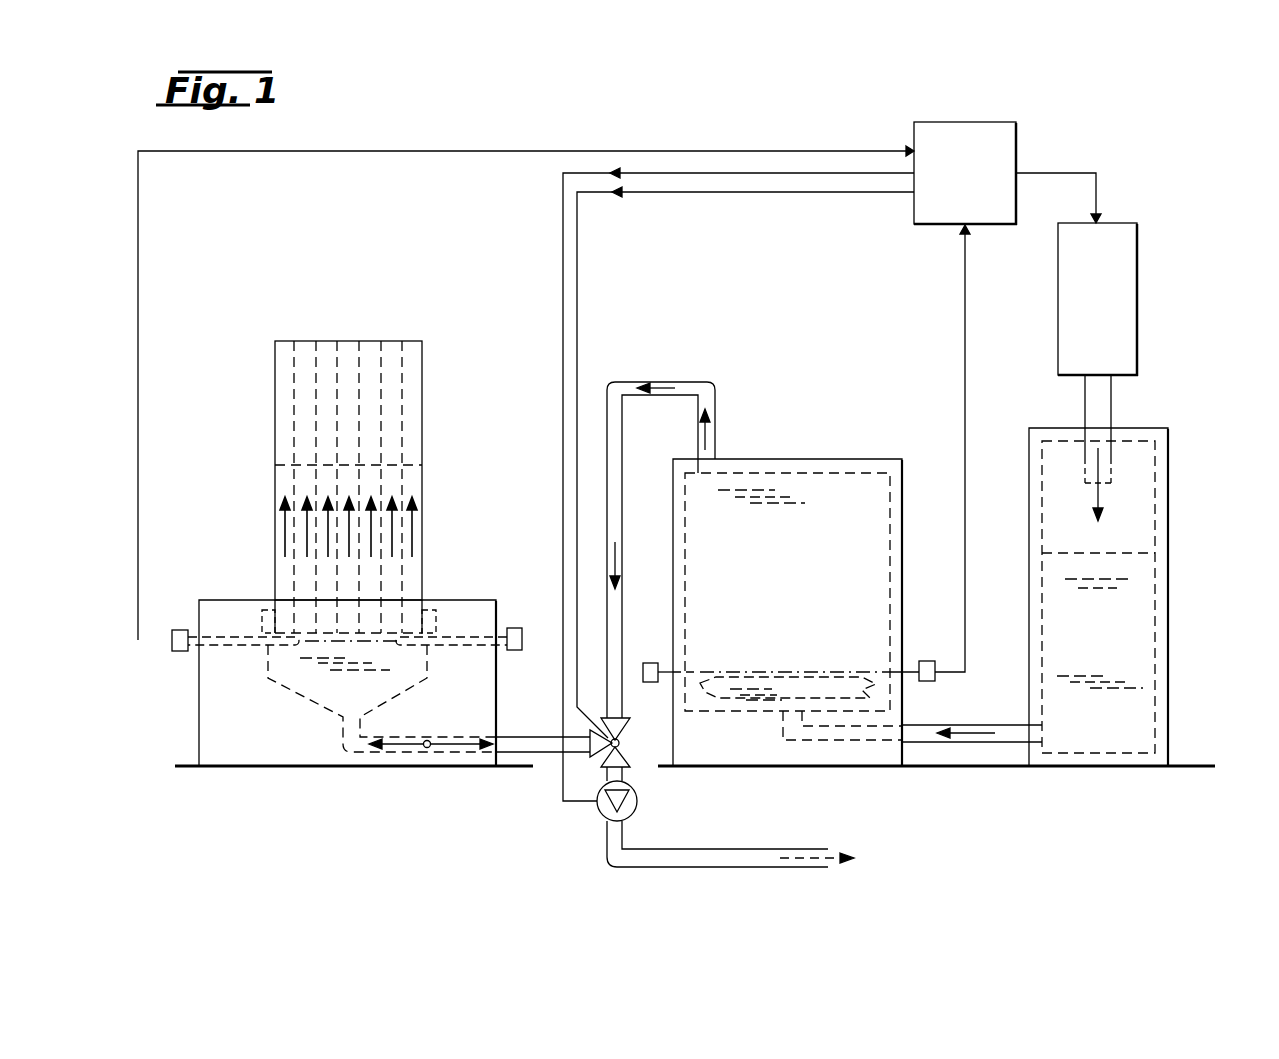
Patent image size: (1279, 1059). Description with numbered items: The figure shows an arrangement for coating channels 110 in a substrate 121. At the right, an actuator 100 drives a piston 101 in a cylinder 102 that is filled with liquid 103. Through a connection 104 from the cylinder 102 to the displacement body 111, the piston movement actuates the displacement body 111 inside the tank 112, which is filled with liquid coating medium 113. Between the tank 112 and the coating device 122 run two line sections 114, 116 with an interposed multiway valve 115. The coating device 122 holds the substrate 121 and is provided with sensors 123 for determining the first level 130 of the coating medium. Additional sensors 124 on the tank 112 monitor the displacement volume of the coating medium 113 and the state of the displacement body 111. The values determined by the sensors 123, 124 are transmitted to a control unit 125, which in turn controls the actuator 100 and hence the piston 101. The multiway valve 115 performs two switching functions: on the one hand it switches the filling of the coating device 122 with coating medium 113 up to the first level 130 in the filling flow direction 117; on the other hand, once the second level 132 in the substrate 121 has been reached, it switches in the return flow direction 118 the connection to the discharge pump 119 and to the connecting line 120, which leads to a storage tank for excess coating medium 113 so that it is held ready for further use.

The actuator 100 is at (1115, 312).
The piston 101 is at (1140, 527).
The cylinder 102 is at (1175, 635).
The liquid 103 is at (1094, 690).
The connection 104 is at (978, 740).
The channels 110 is at (388, 341).
The displacement body 111 is at (792, 668).
The tank 112 is at (866, 453).
The coating medium 113 is at (765, 492).
The line section 114 is at (660, 386).
The multiway valve 115 is at (630, 755).
The line section 116 is at (439, 728).
The filling flow direction 117 is at (398, 753).
The return flow direction 118 is at (452, 753).
The discharge pump 119 is at (598, 813).
The connecting line 120 is at (700, 849).
The substrate 121 is at (268, 348).
The coating device 122 is at (190, 698).
The sensors 123 is at (180, 630).
The additional sensors 124 is at (696, 671).
The control unit 125 is at (984, 187).
The first level 130 is at (332, 632).
The second level 132 is at (308, 458).